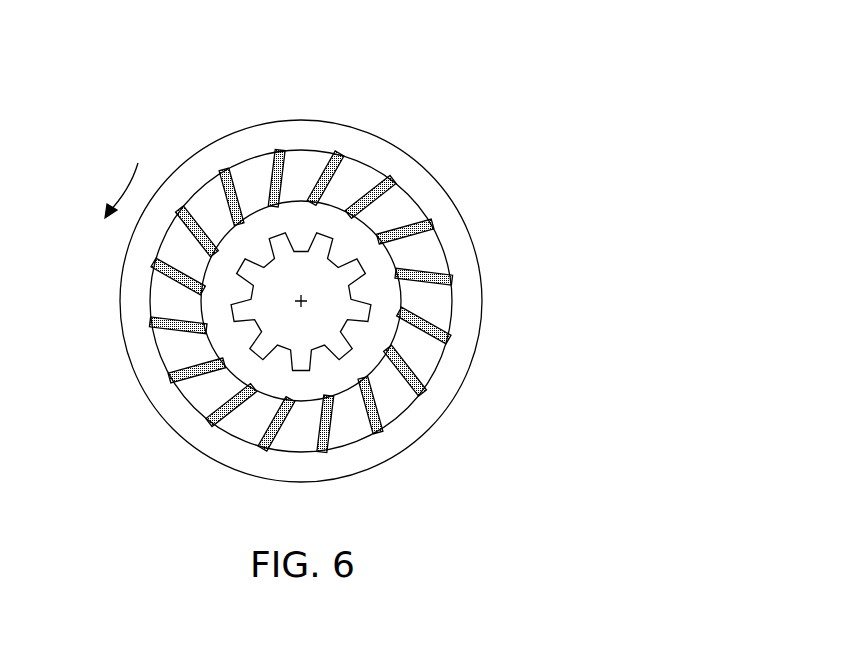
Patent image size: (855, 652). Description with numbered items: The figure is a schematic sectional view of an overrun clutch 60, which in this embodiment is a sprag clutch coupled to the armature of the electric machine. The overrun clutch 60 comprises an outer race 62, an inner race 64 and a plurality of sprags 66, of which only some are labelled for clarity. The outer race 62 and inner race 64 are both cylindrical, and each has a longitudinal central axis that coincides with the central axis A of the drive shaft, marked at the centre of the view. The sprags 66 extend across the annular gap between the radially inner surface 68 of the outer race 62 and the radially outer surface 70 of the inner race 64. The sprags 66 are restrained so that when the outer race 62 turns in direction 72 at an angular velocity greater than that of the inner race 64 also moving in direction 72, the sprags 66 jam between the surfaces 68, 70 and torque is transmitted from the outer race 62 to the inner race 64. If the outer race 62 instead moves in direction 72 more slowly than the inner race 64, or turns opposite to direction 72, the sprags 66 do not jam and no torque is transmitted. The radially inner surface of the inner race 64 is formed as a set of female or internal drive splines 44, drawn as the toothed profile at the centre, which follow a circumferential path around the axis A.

The female drive splines 44 is at (242, 292).
The overrun clutch 60 is at (466, 132).
The outer race 62 is at (470, 268).
The inner race 64 is at (385, 332).
The sprags 66 is at (272, 178).
The radially inner surface of the outer race 68 is at (312, 148).
The radially outer surface of the inner race 70 is at (376, 224).
The direction of rotation 72 is at (123, 182).
The central axis A is at (299, 303).